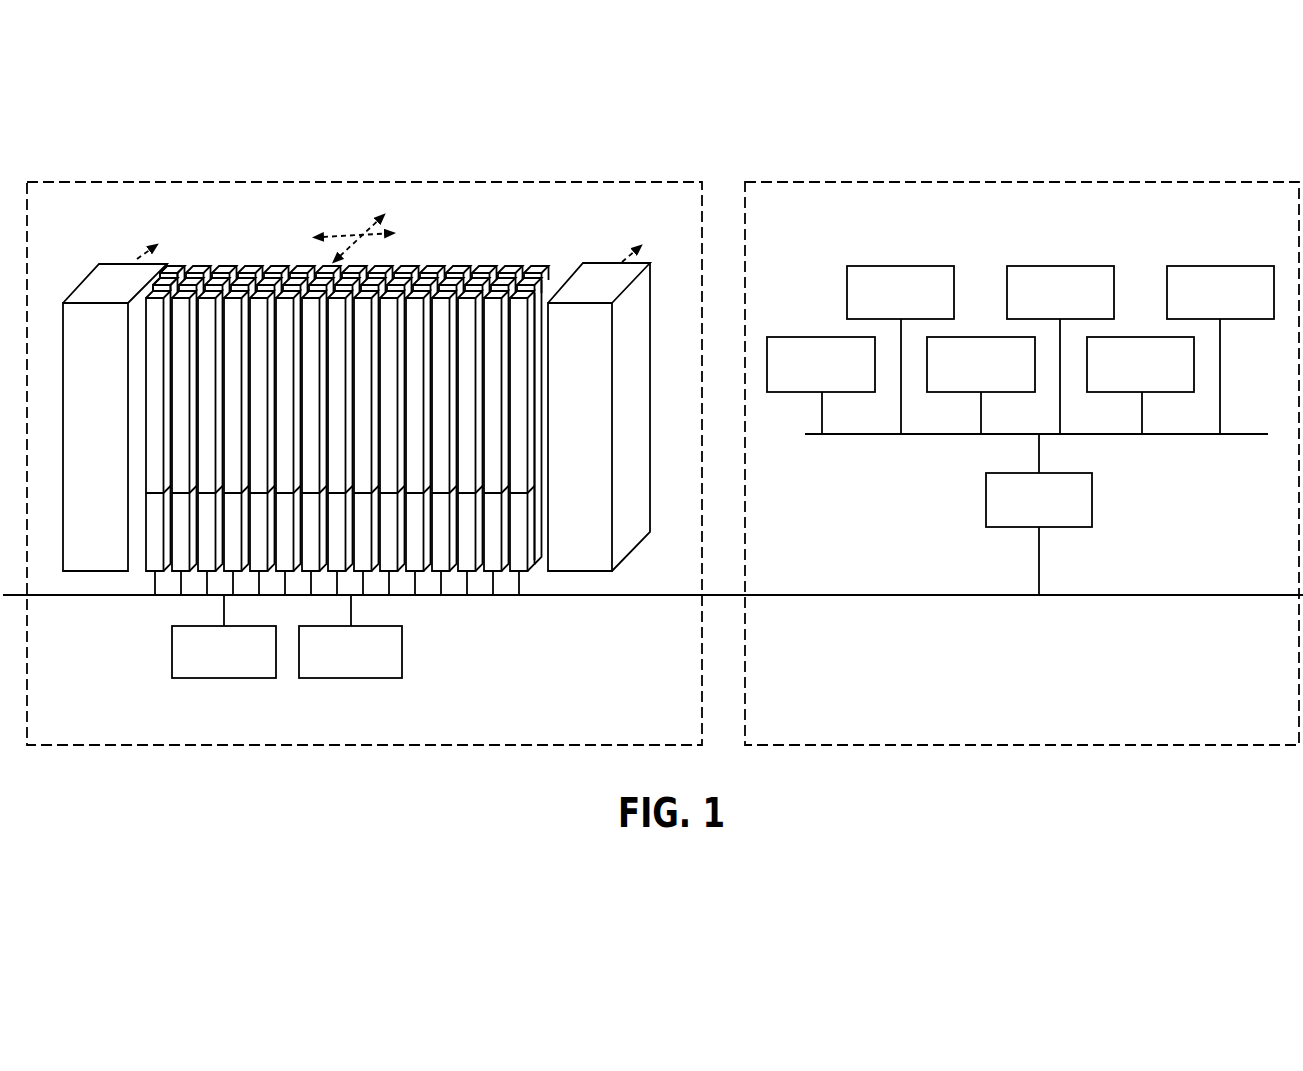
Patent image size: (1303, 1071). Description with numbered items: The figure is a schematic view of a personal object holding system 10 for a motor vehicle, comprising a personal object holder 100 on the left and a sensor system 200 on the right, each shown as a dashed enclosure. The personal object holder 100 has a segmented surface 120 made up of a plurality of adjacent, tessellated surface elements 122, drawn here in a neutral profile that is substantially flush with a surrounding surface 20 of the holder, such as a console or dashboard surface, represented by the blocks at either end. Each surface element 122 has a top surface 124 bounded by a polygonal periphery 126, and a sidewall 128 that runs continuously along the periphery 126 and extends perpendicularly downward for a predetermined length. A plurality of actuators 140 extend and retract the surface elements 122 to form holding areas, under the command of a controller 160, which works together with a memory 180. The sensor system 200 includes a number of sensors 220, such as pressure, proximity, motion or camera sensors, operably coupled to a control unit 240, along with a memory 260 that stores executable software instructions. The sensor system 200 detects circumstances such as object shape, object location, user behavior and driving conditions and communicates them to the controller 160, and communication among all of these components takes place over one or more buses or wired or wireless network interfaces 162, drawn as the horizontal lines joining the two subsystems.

The personal object holding system 10 is at (798, 82).
The personal object holder 100 is at (213, 182).
The segmented surface 120 is at (338, 359).
The surface element 122 is at (546, 268).
The top surface 124 is at (193, 268).
The periphery 126 is at (182, 265).
The sidewall 128 is at (158, 334).
The actuator 140 is at (520, 520).
The controller 160 is at (246, 663).
The memory 180 is at (373, 663).
The buses and/or network interfaces 162 is at (938, 436).
The surrounding surface 20 is at (125, 294).
The sensor system 200 is at (1171, 182).
The sensor 220 is at (893, 266).
The control unit 240 is at (1092, 490).
The memory 260 is at (1220, 266).